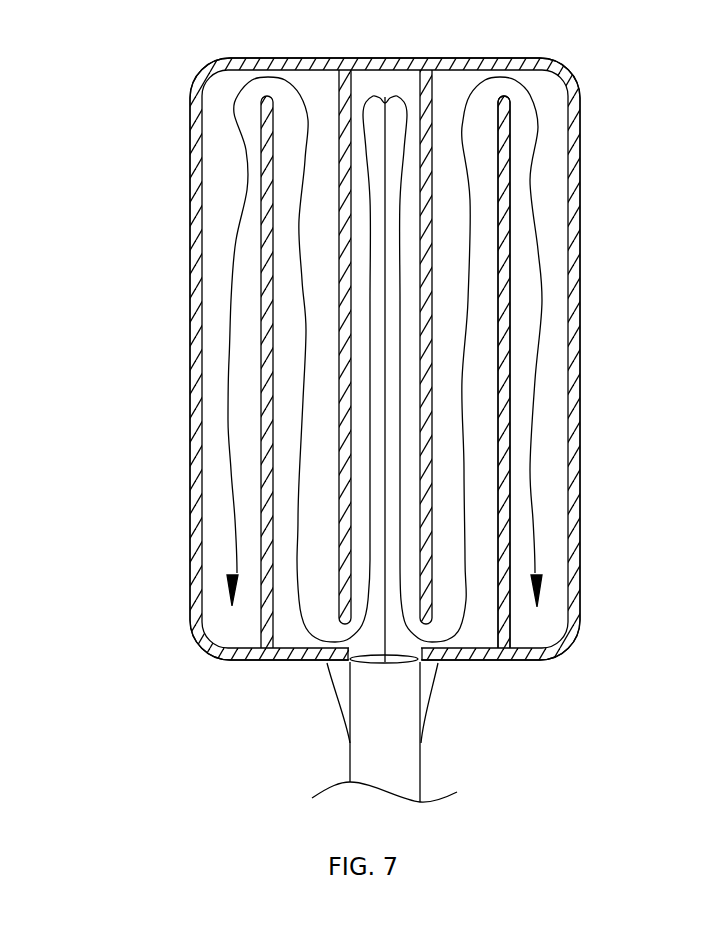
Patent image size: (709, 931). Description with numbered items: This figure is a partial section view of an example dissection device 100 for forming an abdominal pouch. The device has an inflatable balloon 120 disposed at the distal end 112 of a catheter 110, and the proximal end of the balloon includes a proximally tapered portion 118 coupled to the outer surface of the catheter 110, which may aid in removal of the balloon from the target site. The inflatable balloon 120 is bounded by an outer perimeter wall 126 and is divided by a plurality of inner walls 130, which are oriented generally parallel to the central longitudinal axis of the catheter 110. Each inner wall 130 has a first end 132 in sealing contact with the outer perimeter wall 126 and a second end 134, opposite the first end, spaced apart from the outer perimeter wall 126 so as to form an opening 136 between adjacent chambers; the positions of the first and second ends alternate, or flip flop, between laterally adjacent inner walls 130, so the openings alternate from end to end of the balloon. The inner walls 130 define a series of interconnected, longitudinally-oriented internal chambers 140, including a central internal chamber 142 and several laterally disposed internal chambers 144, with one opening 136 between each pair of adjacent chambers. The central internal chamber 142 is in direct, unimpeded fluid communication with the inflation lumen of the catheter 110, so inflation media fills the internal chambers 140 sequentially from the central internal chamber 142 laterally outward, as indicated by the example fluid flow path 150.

The dissection device 100 is at (100, 77).
The catheter 110 is at (412, 763).
The distal end 112 is at (403, 680).
The proximally tapered portion 118 is at (340, 700).
The inflatable balloon 120 is at (580, 403).
The outer perimeter wall 126 is at (233, 62).
The inner walls 130 is at (427, 95).
The first end 132 is at (413, 83).
The second end 134 is at (510, 105).
The opening 136 is at (507, 88).
The internal chambers 140 is at (215, 445).
The central internal chamber 142 is at (385, 78).
The laterally disposed internal chambers 144 is at (322, 80).
The fluid flow path 150 is at (528, 492).